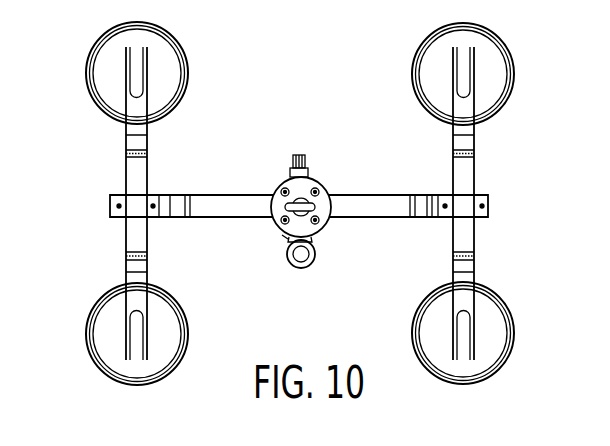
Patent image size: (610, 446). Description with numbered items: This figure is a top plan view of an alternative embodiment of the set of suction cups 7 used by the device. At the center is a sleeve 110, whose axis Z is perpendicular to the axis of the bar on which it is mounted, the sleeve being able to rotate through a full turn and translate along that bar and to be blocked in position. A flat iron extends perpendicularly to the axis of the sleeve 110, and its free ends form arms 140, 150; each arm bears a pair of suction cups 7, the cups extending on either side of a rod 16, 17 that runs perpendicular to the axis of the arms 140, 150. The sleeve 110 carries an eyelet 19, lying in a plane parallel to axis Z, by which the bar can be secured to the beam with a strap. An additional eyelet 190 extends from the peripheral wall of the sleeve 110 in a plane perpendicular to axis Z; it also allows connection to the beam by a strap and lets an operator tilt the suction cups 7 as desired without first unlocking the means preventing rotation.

The suction cups 7 is at (185, 53).
The rod 16 is at (468, 240).
The rod 17 is at (127, 247).
The eyelet 19 is at (312, 200).
The sleeve 110 is at (277, 182).
The arm 140 is at (227, 194).
The arm 150 is at (375, 190).
The additional eyelet 190 is at (302, 268).